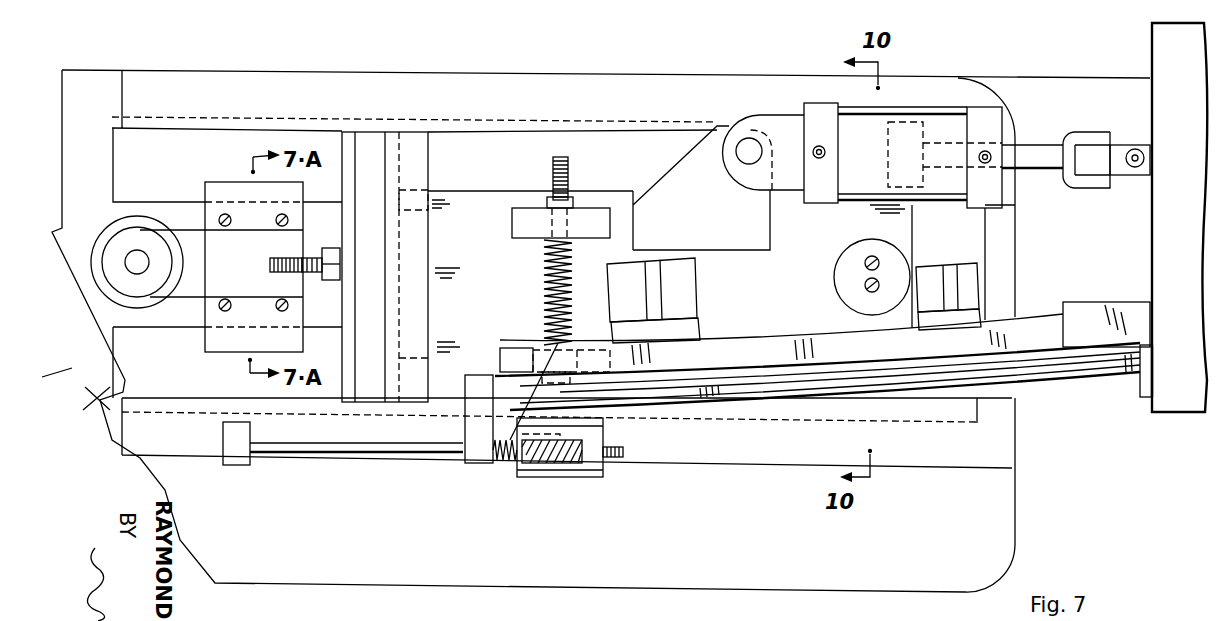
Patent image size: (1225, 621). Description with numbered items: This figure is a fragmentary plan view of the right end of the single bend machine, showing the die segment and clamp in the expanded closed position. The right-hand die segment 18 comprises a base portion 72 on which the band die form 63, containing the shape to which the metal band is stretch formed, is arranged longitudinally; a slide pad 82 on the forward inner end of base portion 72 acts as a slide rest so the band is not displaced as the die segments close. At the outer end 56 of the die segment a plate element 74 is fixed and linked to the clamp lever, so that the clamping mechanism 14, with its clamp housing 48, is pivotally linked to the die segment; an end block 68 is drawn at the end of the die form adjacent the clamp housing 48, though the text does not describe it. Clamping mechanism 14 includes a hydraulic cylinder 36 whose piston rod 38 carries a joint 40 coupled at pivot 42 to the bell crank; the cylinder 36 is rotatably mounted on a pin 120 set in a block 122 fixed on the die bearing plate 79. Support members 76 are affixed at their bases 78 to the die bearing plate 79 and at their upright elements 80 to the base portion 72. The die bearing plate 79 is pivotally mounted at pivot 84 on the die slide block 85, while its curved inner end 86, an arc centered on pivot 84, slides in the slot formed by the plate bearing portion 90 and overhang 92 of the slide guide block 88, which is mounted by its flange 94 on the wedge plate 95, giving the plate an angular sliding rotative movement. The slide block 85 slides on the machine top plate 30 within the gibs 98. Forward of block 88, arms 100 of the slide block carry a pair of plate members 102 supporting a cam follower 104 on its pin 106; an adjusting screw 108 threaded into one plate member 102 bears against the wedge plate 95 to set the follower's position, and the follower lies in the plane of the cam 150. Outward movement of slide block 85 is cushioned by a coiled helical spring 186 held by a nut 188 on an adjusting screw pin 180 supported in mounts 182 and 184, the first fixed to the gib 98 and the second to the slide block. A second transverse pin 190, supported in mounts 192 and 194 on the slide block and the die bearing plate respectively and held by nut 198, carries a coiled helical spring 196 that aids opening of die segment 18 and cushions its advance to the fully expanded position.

The machine top plate 30 is at (100, 72).
The gibs 98 is at (230, 78).
The arms 100 is at (123, 147).
The plate members 102 is at (210, 217).
The cam follower 104 is at (99, 228).
The pin 106 is at (137, 268).
The adjusting screw 108 is at (303, 277).
The wedge plate 95 is at (348, 137).
The flange 94 is at (355, 405).
The slide guide block 88 is at (390, 405).
The overhang 92 is at (400, 402).
The inner end of die bearing plate 86 is at (428, 208).
The plate bearing portion 90 is at (408, 360).
The die slide block 85 is at (508, 148).
The block 122 is at (677, 170).
The die bearing plate 79 is at (622, 200).
The pin 120 is at (748, 147).
The hydraulic piston type cylinder 36 is at (933, 122).
The piston rod 38 is at (1030, 147).
The joint 40 is at (1070, 132).
The pivot 42 is at (1135, 153).
The clamping mechanism 14 is at (1148, 52).
The nut 198 is at (550, 197).
The mount 194 is at (512, 225).
The coiled helical spring 196 is at (545, 258).
The pin 190 is at (548, 290).
The mount 192 is at (507, 357).
The bases 78 is at (688, 278).
The support members 76 is at (703, 301).
The upright elements 80 is at (695, 327).
The pivot 84 is at (836, 287).
The base portion 72 is at (1002, 328).
The plate element 74 is at (1105, 303).
The end block 68 is at (1140, 395).
The die segment 18 is at (1038, 314).
The band die form 63 is at (797, 388).
The outer end of die segment 56 is at (1090, 368).
The clamp housing 48 is at (1185, 412).
The mount 182 is at (238, 453).
The adjusting screw pin 180 is at (287, 443).
The mount 184 is at (477, 465).
The coiled helical spring 186 is at (502, 463).
The slide pad 82 is at (552, 470).
The nut 188 is at (580, 465).
The cam 150 is at (97, 407).